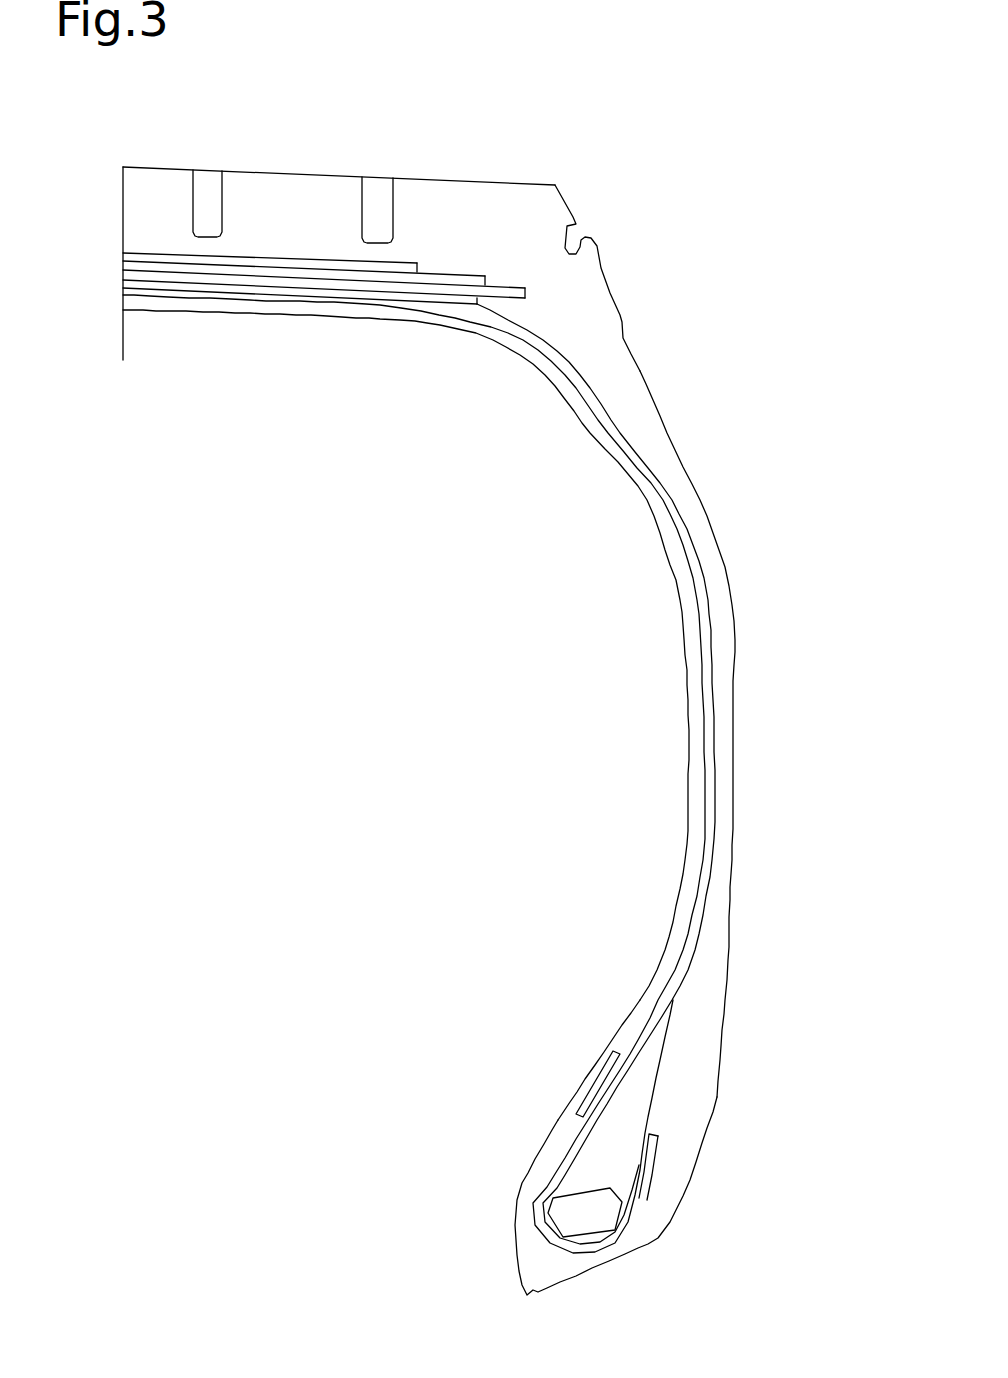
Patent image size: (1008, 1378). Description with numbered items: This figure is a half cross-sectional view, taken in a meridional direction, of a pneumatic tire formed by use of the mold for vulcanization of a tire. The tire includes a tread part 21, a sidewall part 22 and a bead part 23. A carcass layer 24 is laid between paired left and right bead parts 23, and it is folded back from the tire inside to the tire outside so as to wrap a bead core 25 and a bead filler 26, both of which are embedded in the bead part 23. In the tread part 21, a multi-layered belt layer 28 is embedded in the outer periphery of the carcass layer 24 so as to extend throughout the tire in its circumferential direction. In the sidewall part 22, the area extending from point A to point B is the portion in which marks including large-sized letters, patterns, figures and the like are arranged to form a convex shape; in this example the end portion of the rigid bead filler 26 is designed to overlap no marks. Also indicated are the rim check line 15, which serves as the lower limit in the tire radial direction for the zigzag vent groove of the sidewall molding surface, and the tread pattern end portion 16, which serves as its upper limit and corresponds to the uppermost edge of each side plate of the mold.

The tread part 21 is at (339, 155).
The tread pattern end portion 16 is at (654, 278).
The belt layer 28 is at (324, 329).
The carcass layer 24 is at (419, 774).
The sidewall part 22 is at (765, 734).
The point A is at (733, 813).
The point B is at (728, 960).
The rim check line 15 is at (675, 1190).
The bead part 23 is at (687, 1134).
The bead filler 26 is at (575, 1061).
The bead core 25 is at (533, 1230).